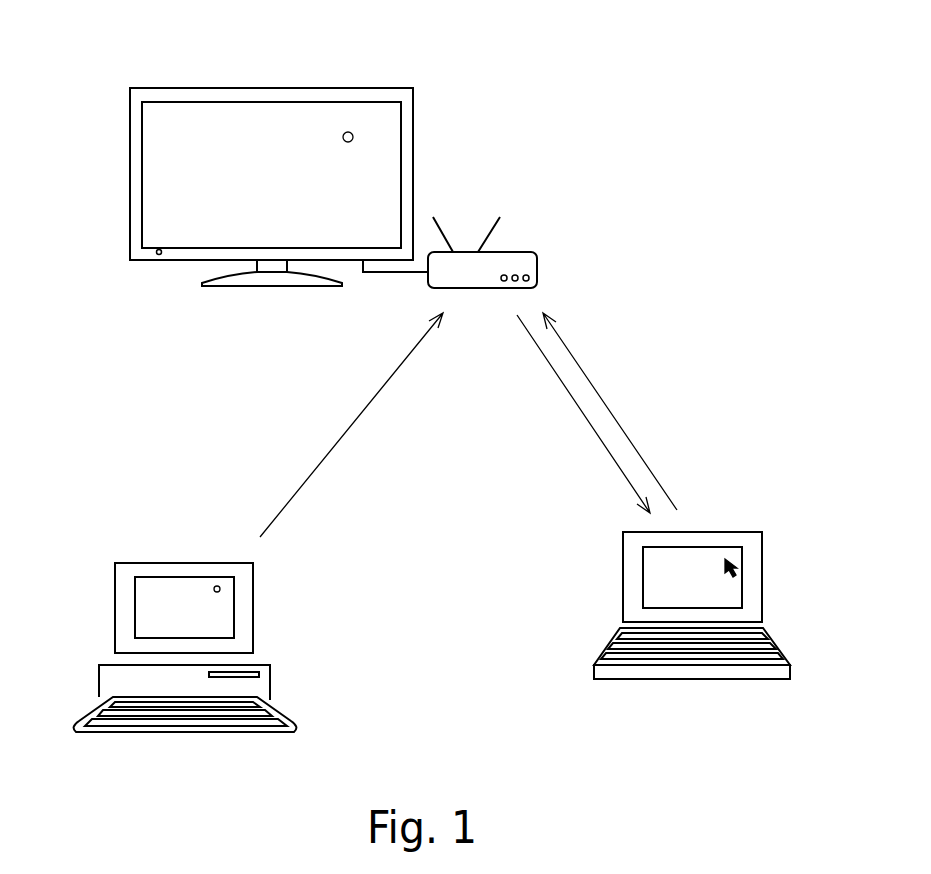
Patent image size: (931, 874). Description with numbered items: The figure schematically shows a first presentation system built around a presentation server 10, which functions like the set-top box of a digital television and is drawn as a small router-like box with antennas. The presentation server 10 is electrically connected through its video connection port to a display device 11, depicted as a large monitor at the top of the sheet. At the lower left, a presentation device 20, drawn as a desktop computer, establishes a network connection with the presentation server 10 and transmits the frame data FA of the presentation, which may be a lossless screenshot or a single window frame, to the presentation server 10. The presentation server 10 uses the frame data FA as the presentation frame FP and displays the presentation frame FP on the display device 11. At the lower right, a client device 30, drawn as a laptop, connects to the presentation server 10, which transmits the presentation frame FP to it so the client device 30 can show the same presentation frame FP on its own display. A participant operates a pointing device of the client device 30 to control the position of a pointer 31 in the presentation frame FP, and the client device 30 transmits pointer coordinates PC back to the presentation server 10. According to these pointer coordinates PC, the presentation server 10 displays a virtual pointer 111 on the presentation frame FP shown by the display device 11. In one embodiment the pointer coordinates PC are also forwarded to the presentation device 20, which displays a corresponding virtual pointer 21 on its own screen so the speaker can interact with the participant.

The presentation server 10 is at (512, 252).
The display device 11 is at (202, 88).
The virtual pointer 111 is at (348, 132).
The presentation device 20 is at (144, 563).
The virtual pointer 21 is at (220, 589).
The client device 30 is at (726, 532).
The pointer 31 is at (731, 562).
The frame data FA is at (351, 425).
The presentation frame FP is at (100, 140).
The pointer coordinates PC is at (615, 411).